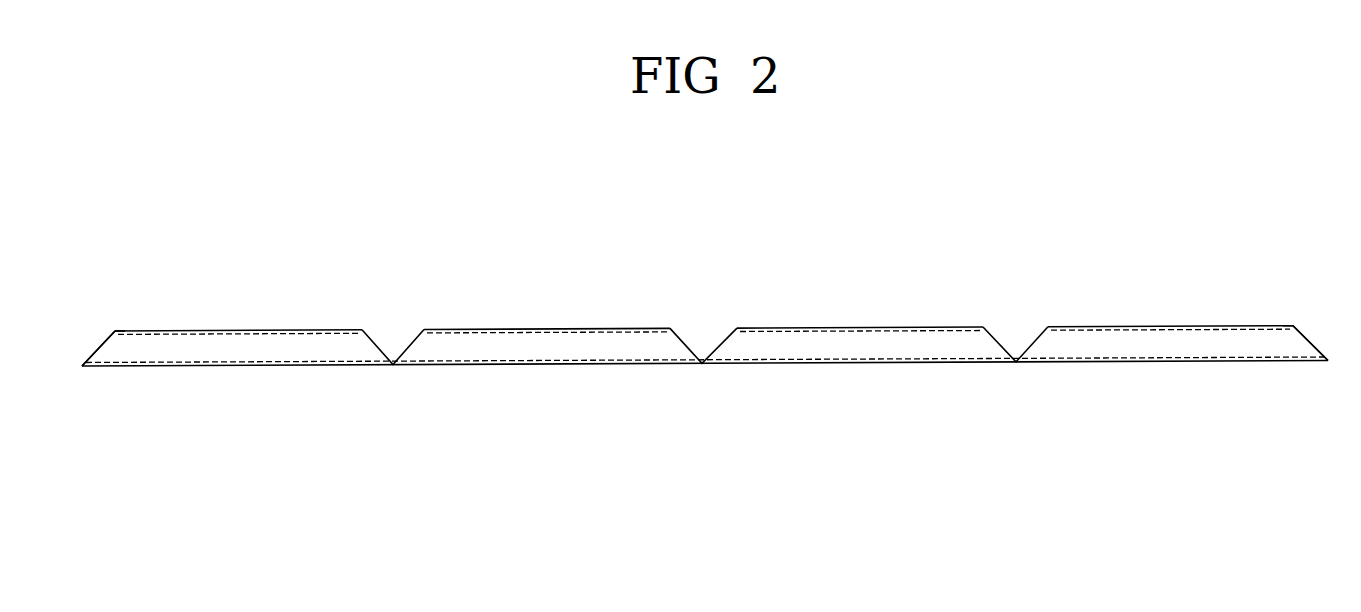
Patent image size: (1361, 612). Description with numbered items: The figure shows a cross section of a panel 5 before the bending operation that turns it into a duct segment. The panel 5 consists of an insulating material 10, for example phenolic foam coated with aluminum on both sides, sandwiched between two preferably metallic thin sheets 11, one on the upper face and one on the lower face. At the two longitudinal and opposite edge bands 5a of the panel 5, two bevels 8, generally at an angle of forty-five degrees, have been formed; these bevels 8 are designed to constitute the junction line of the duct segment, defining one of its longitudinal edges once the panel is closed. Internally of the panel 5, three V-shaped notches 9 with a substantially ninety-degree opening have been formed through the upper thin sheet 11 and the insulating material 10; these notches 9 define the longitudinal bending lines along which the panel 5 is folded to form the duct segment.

The panel 5 is at (808, 357).
The edge band 5a is at (87, 343).
The bevel 8 is at (109, 331).
The V-shaped notch 9 is at (378, 342).
The insulating material 10 is at (632, 345).
The thin sheet 11 is at (257, 330).